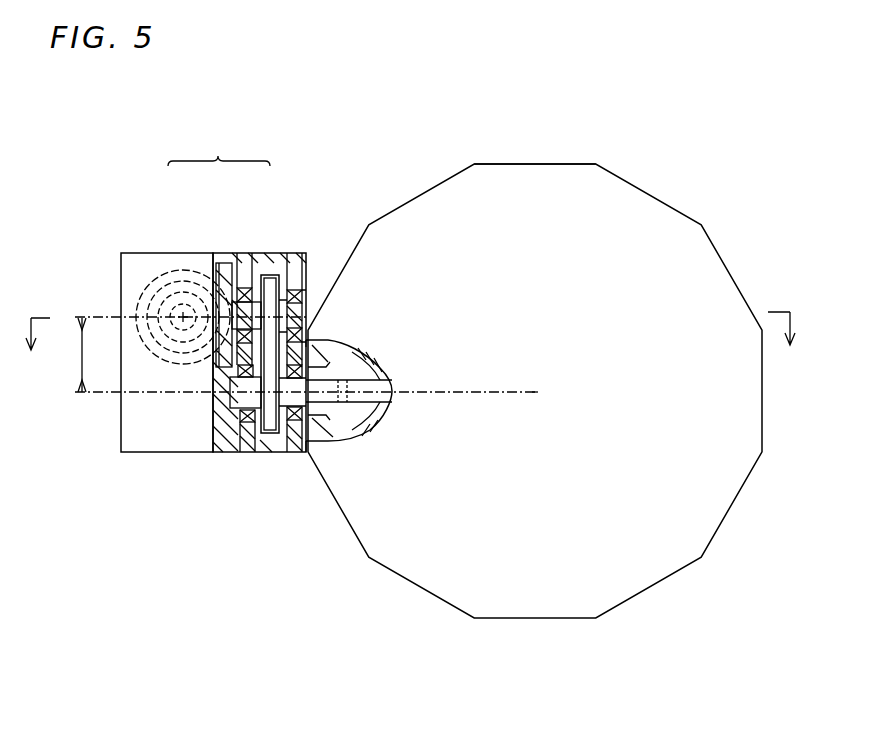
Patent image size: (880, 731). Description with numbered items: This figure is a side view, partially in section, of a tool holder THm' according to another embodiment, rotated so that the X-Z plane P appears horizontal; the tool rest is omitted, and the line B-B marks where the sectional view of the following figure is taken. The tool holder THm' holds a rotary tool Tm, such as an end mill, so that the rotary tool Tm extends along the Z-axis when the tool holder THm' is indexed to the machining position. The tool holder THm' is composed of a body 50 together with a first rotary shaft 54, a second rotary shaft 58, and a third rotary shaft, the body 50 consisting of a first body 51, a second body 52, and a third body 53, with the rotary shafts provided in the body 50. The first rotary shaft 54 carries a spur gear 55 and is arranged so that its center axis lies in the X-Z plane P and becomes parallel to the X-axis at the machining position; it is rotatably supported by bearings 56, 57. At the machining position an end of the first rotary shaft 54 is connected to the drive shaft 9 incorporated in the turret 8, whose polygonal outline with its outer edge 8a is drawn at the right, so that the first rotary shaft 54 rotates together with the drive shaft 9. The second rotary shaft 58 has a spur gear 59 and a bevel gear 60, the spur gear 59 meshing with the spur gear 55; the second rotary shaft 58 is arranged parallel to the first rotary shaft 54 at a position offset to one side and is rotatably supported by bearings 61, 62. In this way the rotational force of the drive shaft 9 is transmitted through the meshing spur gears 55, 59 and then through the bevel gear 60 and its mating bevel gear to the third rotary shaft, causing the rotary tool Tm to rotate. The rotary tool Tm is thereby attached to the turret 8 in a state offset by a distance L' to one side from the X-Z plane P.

The turret 8 is at (666, 203).
The wheel outer edge 8a is at (541, 380).
The drive shaft 9 is at (355, 437).
The body 50 is at (219, 152).
The first body 51 is at (273, 256).
The second body 52 is at (236, 280).
The third body 53 is at (150, 262).
The first rotary shaft 54 is at (310, 453).
The spur gear 55 is at (274, 425).
The bearing 56 is at (291, 432).
The bearing 57 is at (242, 428).
The second rotary shaft 58 is at (297, 273).
The spur gear 59 is at (278, 272).
The bevel gear 60 is at (217, 268).
The bearing 61 is at (306, 285).
The bearing 62 is at (248, 287).
The rotary tool Tm is at (153, 263).
The tool holder THm' is at (322, 153).
The X-Z plane P is at (483, 390).
The line B- B is at (410, 320).
The distance L' is at (73, 355).